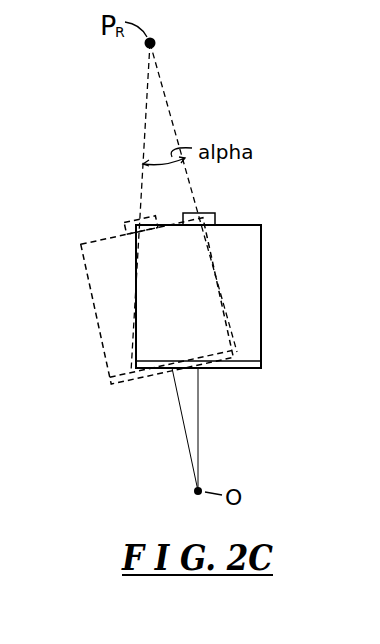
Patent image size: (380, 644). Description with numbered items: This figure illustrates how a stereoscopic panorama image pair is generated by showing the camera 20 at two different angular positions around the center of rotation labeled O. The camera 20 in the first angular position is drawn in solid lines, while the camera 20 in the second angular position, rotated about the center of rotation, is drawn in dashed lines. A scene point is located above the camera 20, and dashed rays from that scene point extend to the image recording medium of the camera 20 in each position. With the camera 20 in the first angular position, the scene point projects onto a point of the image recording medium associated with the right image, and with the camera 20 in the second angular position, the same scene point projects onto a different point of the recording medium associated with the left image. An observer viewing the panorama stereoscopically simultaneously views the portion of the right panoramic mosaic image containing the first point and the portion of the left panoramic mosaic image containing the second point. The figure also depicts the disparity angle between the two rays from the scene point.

The camera 20 is at (262, 277).